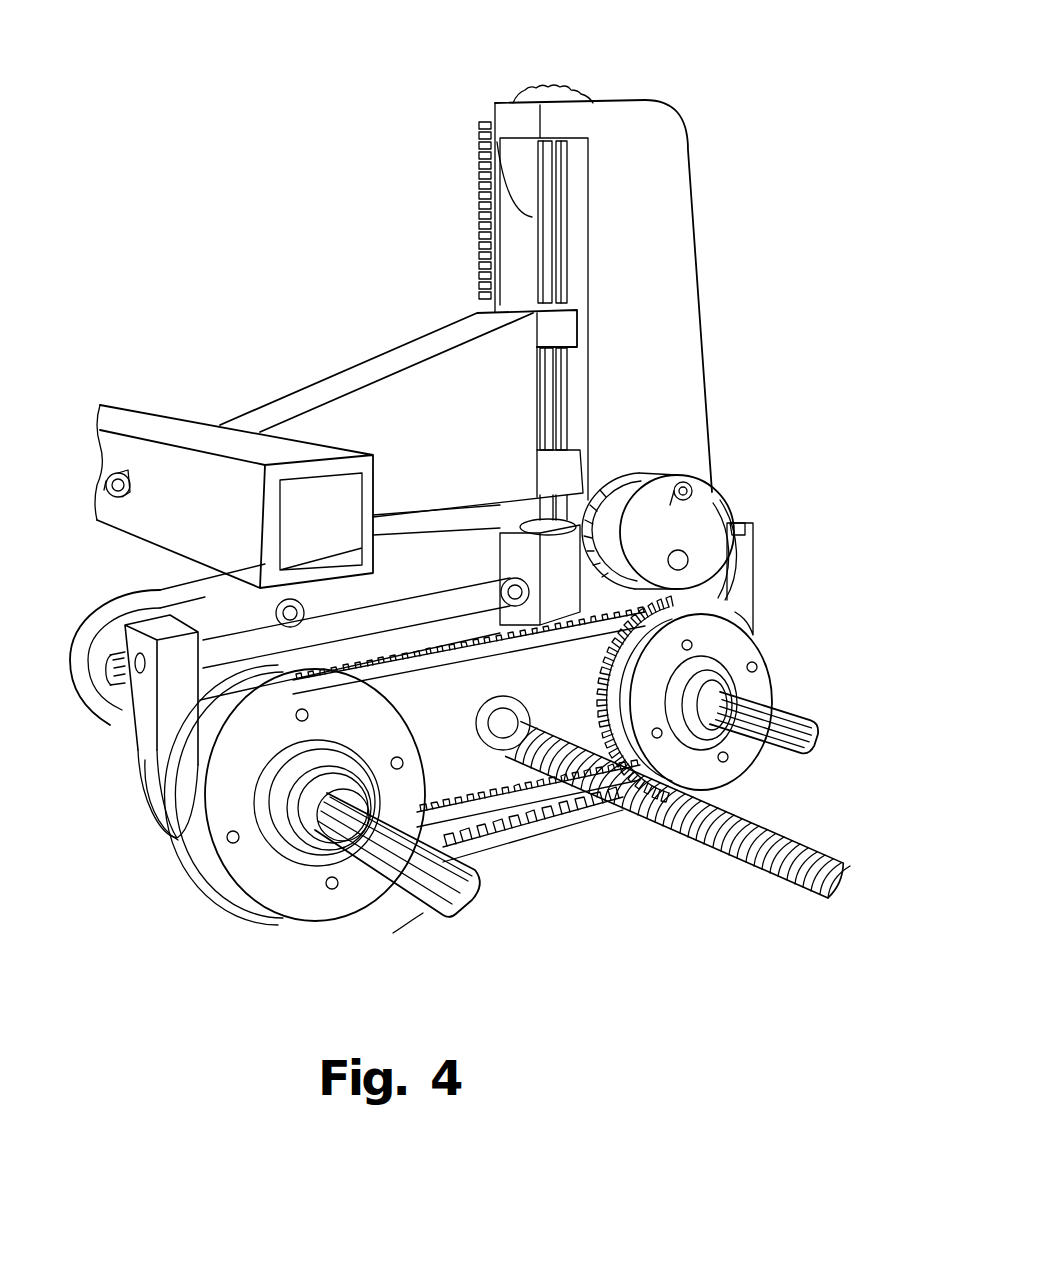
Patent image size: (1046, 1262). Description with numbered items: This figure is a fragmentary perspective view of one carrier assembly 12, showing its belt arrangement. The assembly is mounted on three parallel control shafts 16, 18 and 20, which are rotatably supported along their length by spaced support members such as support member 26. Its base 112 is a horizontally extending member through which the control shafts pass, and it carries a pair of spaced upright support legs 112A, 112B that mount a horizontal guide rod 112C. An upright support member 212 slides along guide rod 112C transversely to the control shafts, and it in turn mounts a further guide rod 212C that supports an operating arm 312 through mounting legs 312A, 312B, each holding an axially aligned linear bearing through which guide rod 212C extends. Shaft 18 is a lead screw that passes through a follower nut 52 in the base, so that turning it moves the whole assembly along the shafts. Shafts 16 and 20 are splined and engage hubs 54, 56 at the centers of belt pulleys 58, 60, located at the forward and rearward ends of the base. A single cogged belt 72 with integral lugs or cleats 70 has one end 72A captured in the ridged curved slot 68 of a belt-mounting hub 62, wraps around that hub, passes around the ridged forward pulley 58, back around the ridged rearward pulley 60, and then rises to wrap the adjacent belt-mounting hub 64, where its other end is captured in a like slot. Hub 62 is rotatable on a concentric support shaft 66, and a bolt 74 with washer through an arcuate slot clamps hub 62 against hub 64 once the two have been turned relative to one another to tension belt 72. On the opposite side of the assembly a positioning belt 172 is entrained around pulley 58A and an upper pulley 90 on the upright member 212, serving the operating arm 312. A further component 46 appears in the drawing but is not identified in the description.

The carrier assembly 12 is at (697, 124).
The control shaft 16 is at (428, 908).
The control shaft 18 is at (735, 855).
The control shaft 20 is at (805, 716).
The support member 26 is at (207, 610).
The mounting bracket 46 is at (174, 433).
The follower nut 52 is at (125, 490).
The hub 54 is at (323, 760).
The hub 56 is at (707, 670).
The belt pulley 58 is at (248, 901).
The belt pulley 58A is at (157, 807).
The belt pulley 60 is at (683, 773).
The belt-mounting hub 62 is at (713, 493).
The belt-mounting hub 64 is at (607, 497).
The support shaft 66 is at (676, 552).
The curved slot 68 is at (738, 523).
The lugs or cleats 70 is at (590, 815).
The cogged belt 72 is at (563, 836).
The belt end 72A is at (732, 513).
The bolt 74 is at (697, 493).
The pulley 90 is at (493, 171).
The base 112 is at (414, 702).
The upright support leg 112A is at (143, 723).
The upright support leg 112B is at (745, 583).
The guide rod 112C is at (417, 612).
The positioning belt 172 is at (480, 232).
The upright support member 212 is at (677, 258).
The guide rod 212C is at (553, 222).
The operating arm 312 is at (438, 425).
The mounting leg 312A is at (563, 333).
The mounting leg 312B is at (565, 476).